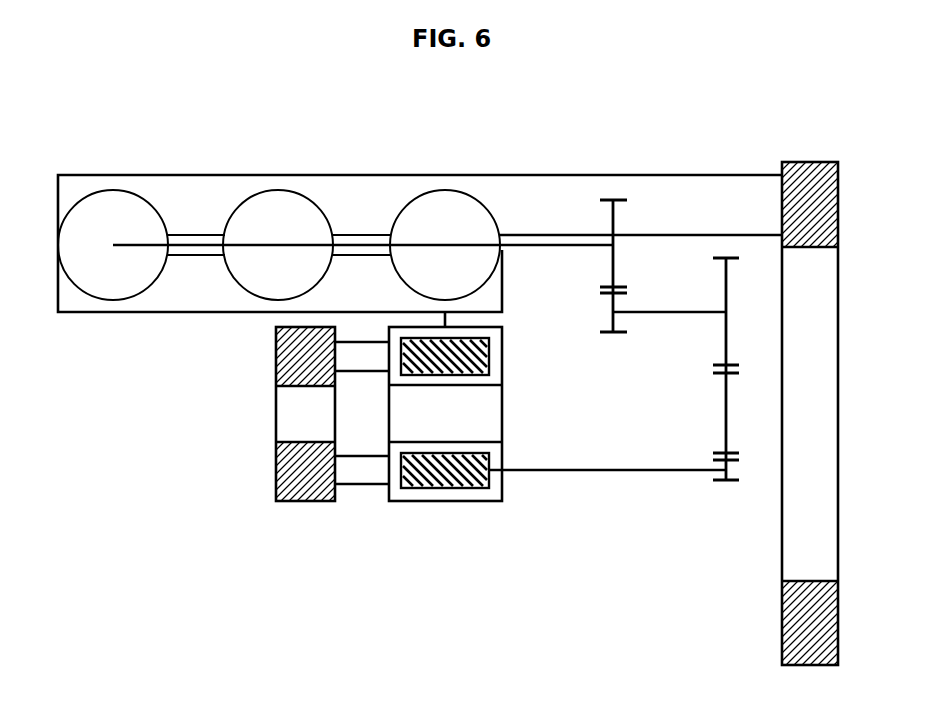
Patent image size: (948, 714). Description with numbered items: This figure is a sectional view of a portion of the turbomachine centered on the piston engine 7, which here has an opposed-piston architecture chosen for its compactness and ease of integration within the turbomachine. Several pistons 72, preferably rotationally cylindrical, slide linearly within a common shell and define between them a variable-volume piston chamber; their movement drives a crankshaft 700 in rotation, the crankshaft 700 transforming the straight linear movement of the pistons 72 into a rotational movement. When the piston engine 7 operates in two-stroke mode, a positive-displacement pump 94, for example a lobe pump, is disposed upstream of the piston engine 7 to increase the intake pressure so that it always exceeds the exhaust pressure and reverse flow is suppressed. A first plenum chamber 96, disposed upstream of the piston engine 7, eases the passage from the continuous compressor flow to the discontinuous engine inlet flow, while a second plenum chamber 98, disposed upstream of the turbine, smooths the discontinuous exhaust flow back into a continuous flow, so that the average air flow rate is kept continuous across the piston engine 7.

The piston engine 7 is at (374, 130).
The piston 72 is at (116, 205).
The crankshaft 700 is at (283, 223).
The positive-displacement pump 94 is at (504, 355).
The first plenum chamber 96 is at (275, 455).
The second plenum chamber 98 is at (842, 229).